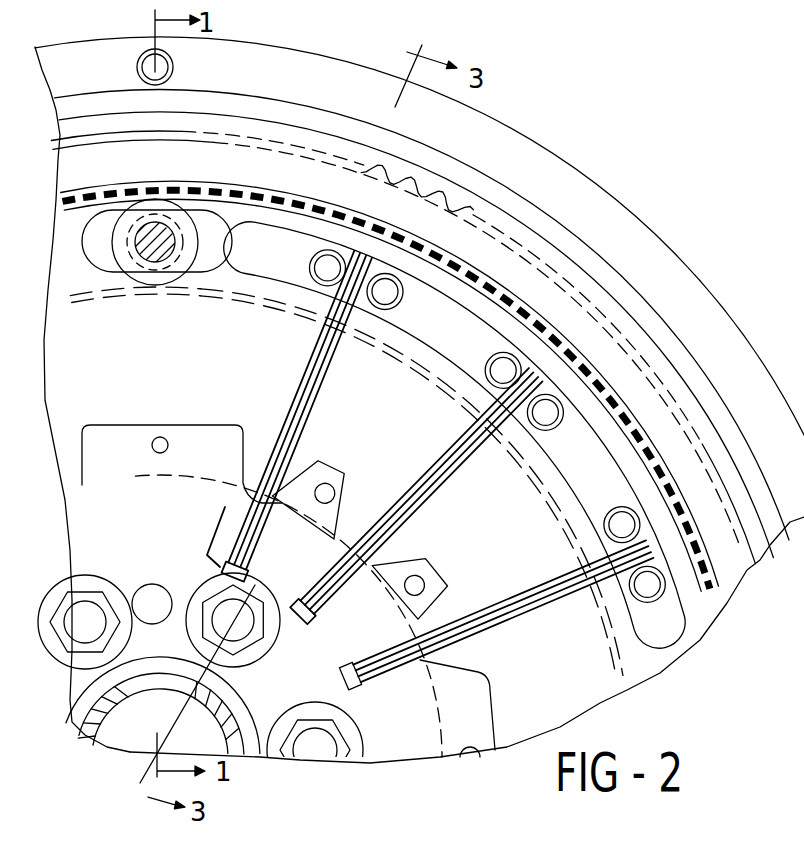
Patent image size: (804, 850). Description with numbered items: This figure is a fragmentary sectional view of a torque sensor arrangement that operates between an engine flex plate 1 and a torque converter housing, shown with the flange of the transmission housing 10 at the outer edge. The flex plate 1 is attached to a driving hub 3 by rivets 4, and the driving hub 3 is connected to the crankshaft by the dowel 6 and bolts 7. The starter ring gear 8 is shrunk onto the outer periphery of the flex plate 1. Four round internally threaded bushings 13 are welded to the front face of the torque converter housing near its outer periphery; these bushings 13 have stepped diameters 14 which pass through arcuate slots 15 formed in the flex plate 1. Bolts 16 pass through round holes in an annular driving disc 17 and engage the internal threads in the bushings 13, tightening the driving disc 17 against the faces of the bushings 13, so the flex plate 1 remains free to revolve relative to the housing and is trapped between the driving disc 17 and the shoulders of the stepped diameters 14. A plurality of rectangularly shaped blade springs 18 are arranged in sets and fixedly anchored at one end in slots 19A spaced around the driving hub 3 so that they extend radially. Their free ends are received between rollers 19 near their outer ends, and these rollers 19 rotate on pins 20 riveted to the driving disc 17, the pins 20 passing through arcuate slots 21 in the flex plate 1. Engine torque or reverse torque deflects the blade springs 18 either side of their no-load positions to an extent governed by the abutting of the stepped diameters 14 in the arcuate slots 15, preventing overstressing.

The engine flex plate 1 is at (520, 320).
The driving hub 3 is at (205, 426).
The rivets 4 is at (157, 436).
The dowel 6 is at (153, 584).
The bolts 7 is at (75, 590).
The starter ring gear 8 is at (458, 206).
The transmission housing 10 is at (605, 186).
The internally threaded bushings 13 is at (178, 205).
The stepped diameters 14 is at (130, 272).
The arcuate slots 15 is at (203, 262).
The bolts 16 is at (160, 264).
The annular driving disc 17 is at (50, 305).
The blade springs 18 is at (540, 597).
The rollers 19 is at (485, 360).
The slots 19A is at (366, 655).
The pins 20 is at (500, 376).
The arcuate slots 21 is at (565, 465).